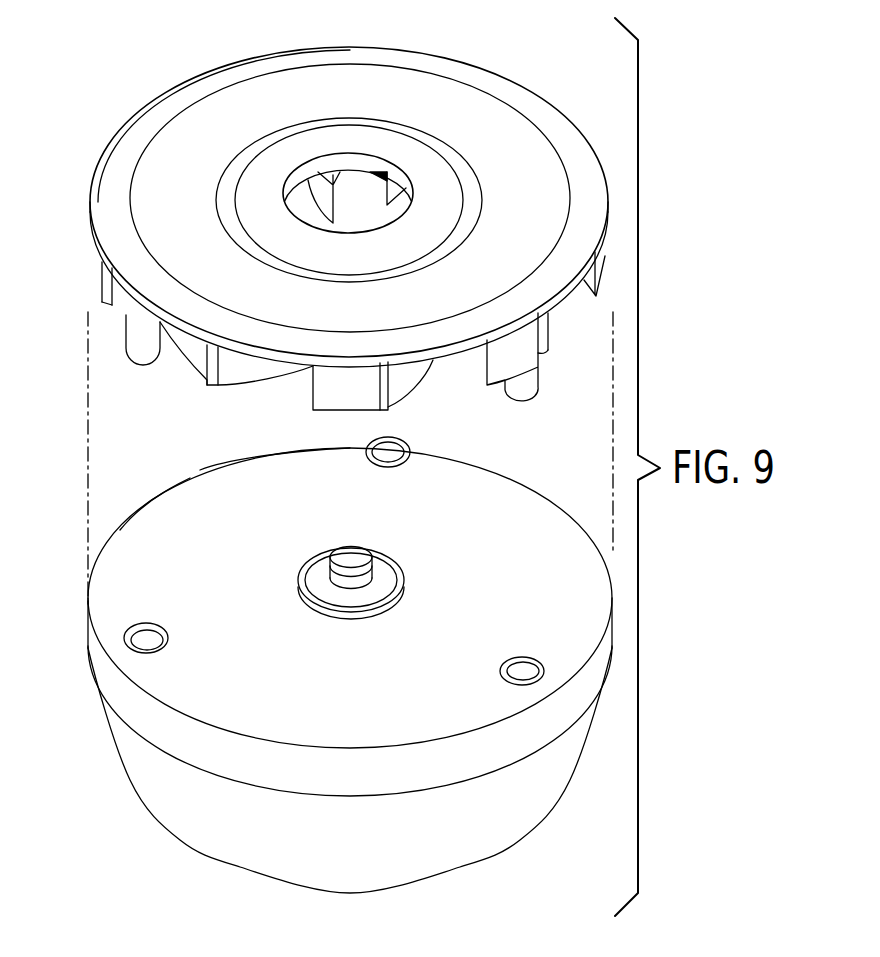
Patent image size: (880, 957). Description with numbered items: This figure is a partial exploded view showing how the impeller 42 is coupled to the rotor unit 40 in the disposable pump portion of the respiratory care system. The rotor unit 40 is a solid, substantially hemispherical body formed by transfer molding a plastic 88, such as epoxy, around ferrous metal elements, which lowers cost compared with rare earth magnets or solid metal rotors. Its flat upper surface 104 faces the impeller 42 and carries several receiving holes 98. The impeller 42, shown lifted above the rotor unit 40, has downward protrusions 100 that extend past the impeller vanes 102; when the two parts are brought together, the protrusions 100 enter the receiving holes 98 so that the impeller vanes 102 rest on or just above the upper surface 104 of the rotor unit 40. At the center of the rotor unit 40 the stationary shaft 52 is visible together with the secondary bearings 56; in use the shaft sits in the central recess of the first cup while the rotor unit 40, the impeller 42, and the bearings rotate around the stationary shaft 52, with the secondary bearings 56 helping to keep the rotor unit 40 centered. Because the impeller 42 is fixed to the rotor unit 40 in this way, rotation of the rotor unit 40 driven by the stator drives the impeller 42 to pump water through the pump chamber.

The rotor unit 40 is at (574, 492).
The impeller 42 is at (502, 74).
The stationary shaft 52 is at (348, 553).
The secondary bearings 56 is at (381, 588).
The plastic 88 is at (262, 460).
The receiving holes 98 is at (388, 452).
The protrusions 100 is at (138, 345).
The impeller vanes 102 is at (604, 293).
The upper surface 104 is at (172, 500).